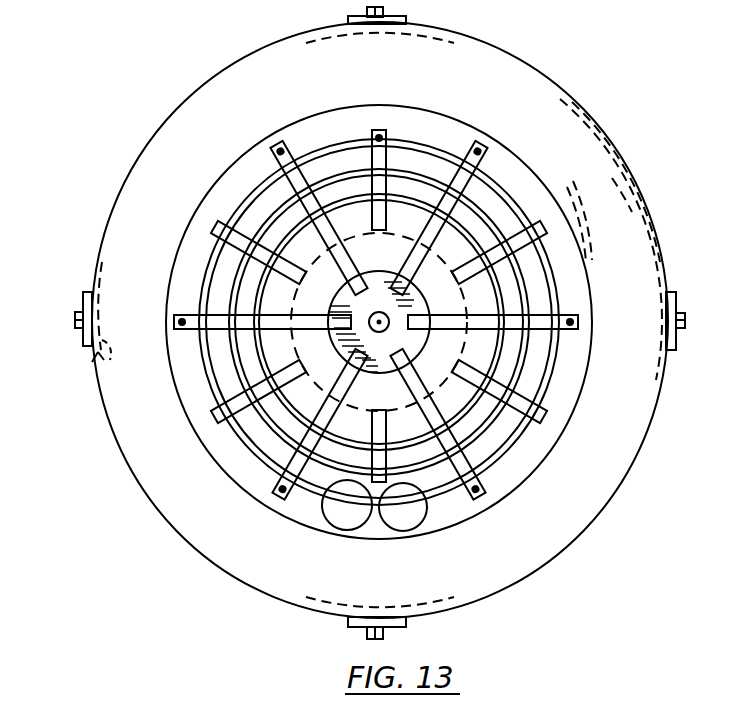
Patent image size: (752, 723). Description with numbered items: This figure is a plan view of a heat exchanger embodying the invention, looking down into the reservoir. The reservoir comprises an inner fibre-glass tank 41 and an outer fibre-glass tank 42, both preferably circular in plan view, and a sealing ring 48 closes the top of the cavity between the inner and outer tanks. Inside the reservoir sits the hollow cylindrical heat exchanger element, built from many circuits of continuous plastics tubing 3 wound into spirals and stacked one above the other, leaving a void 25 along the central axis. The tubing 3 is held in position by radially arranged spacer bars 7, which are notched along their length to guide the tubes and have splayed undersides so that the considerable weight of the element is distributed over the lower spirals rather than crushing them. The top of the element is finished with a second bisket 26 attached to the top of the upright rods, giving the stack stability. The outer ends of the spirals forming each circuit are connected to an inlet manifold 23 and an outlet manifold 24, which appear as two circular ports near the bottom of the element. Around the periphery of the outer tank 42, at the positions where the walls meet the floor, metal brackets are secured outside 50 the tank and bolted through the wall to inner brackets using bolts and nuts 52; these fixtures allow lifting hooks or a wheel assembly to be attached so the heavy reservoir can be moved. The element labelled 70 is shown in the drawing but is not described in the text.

The tubing 3 is at (212, 367).
The spacer bars 7 is at (218, 420).
The inlet manifold 23 is at (342, 520).
The outlet manifold 24 is at (406, 522).
The void 25 is at (379, 305).
The second bisket 26 is at (286, 152).
The inner fibre-glass tank 41 is at (583, 228).
The outer fibre-glass tank 42 is at (622, 172).
The sealing ring 48 is at (580, 130).
The outside bracket 50 is at (100, 362).
The nuts 52 is at (75, 318).
The short spoke 70 is at (545, 402).